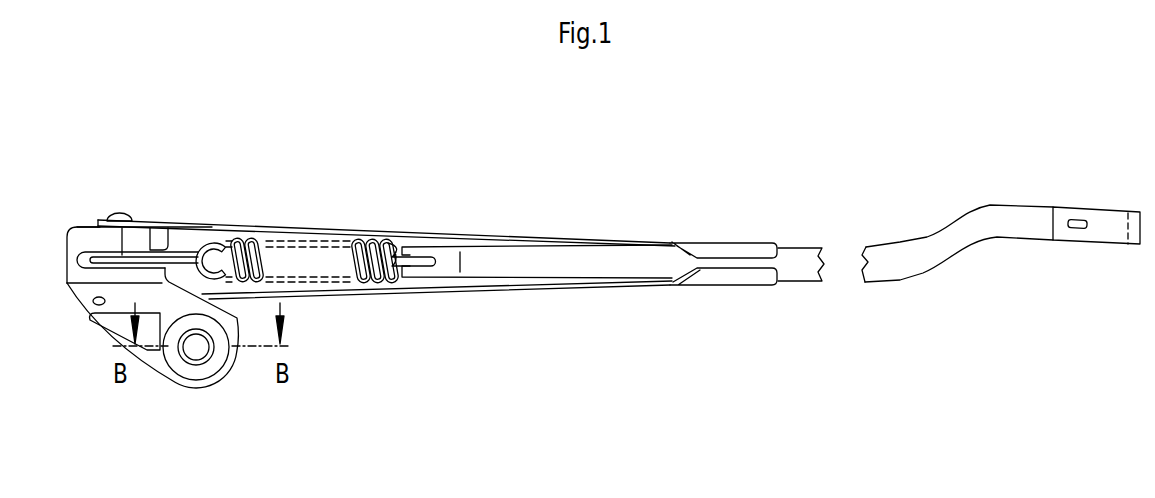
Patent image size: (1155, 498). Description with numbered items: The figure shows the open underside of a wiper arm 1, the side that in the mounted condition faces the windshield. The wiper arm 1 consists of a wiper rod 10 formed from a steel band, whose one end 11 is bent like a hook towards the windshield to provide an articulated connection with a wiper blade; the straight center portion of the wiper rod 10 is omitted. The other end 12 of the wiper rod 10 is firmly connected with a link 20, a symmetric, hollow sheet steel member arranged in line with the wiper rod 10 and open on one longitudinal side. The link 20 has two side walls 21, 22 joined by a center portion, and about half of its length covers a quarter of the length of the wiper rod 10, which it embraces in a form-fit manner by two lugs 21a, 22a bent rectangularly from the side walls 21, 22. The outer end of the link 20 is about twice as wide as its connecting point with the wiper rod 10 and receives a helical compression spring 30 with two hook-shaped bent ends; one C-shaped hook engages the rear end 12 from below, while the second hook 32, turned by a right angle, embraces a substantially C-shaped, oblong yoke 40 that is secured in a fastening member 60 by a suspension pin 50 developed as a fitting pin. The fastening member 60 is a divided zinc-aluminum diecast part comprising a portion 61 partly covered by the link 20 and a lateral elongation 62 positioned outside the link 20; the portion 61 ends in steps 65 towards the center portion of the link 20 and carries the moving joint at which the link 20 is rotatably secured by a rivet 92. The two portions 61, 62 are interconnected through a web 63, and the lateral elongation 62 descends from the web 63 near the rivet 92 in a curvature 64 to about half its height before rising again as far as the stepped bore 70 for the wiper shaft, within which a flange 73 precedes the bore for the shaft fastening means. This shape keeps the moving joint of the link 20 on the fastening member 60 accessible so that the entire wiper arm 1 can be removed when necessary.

The wiper arm 1 is at (592, 408).
The wiper rod 10 is at (803, 256).
The hook-shaped end of wiper rod 11 is at (1112, 220).
The rear end of wiper rod 12 is at (445, 270).
The link 20 is at (365, 204).
The side wall of link 21 is at (484, 235).
The lug of side wall 21a is at (720, 248).
The side wall of link 22 is at (510, 290).
The lug of side wall 22a is at (732, 283).
The compression spring 30 is at (238, 247).
The second hook of spring 32 is at (217, 250).
The yoke 40 is at (185, 260).
The suspension pin 50 is at (112, 253).
The fastening member 60 is at (62, 332).
The portion of fastening member covered by link 61 is at (78, 243).
The lateral elongation 62 is at (235, 350).
The web 63 is at (83, 277).
The curvature 64 is at (115, 328).
The steps 65 is at (162, 250).
The bore for wiper shaft 70 is at (194, 348).
The flange 73 is at (210, 352).
The rivet 92 is at (116, 212).